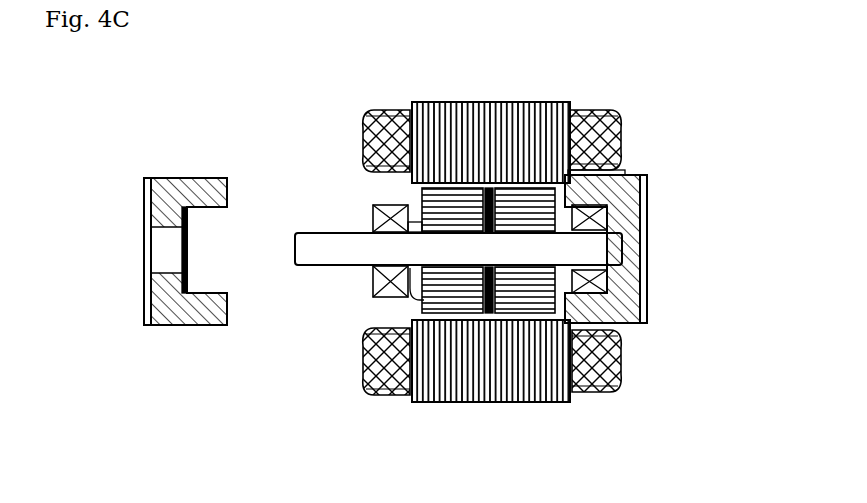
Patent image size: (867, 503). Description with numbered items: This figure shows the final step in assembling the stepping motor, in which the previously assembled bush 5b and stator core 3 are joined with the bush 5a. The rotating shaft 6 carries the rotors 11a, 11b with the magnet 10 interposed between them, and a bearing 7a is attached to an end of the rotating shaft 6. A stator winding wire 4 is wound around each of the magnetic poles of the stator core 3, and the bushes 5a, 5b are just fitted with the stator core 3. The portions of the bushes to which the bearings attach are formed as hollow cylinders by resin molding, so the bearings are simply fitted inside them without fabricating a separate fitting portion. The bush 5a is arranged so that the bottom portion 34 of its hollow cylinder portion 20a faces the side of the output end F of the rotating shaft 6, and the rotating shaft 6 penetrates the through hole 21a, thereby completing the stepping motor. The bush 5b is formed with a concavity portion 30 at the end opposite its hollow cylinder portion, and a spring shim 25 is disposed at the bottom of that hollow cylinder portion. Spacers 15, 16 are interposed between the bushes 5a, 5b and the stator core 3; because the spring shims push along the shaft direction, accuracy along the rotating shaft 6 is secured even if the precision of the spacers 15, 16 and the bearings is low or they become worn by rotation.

The stator core 3 is at (425, 100).
The stator winding wire 4 is at (622, 162).
The bush 5a is at (185, 177).
The bush 5b is at (645, 178).
The rotating shaft 6 is at (321, 258).
The bearing 7a is at (377, 223).
The magnet 10 is at (490, 300).
The rotor 11a is at (457, 220).
The rotor 11b is at (528, 218).
The spacer 15 is at (618, 167).
The spacer 16 is at (417, 277).
The hollow cylinder portion 20a is at (195, 257).
The through hole 21a is at (165, 248).
The spring shim 25 is at (640, 278).
The concavity portion 30 is at (647, 217).
The bottom portion 34 is at (168, 253).
The output end F is at (290, 232).